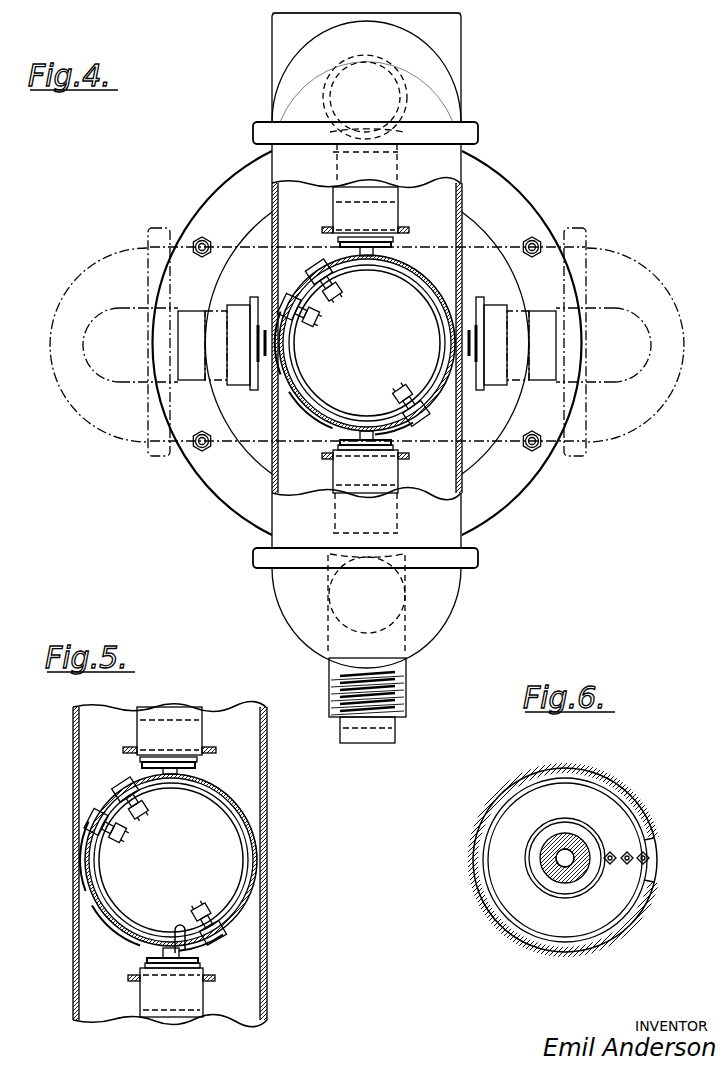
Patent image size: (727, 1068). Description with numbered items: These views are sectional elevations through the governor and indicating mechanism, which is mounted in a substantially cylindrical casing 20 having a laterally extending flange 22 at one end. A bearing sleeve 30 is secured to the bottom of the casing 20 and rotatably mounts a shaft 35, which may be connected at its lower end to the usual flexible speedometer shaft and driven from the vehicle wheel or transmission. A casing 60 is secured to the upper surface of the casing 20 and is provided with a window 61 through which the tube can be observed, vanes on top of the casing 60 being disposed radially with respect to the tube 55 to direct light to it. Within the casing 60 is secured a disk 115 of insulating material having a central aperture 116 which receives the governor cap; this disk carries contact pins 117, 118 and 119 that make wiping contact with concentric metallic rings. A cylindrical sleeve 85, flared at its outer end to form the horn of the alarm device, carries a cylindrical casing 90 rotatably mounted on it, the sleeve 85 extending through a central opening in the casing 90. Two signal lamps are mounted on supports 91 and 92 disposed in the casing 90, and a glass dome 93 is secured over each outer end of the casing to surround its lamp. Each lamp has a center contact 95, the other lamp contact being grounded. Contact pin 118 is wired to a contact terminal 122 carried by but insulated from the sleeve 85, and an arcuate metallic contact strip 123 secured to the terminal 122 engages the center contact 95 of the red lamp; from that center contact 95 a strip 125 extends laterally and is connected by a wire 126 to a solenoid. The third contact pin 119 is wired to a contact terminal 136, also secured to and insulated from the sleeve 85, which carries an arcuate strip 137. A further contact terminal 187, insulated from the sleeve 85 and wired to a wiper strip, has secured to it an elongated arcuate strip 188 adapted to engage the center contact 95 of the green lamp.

In FIG. 4, the casing 20 is at (502, 470).
In FIG. 4, the laterally extending flange 22 is at (488, 512).
In FIG. 4, the bearing sleeve 30 is at (406, 667).
In FIG. 4, the shaft 35 is at (393, 723).
In FIG. 6, the tube 55 is at (548, 873).
In FIG. 4, the casing 60 is at (460, 28).
In FIG. 6, the casing 60 is at (637, 803).
In FIG. 4, the window 61 is at (403, 77).
In FIG. 4, the cylindrical sleeve 85 is at (428, 308).
In FIG. 5, the cylindrical sleeve 85 is at (225, 822).
In FIG. 4, the cylindrical casing 90 is at (463, 194).
In FIG. 5, the cylindrical casing 90 is at (267, 778).
In FIG. 4, the support 91 is at (400, 213).
In FIG. 5, the support 91 is at (203, 730).
In FIG. 4, the support 92 is at (400, 473).
In FIG. 5, the support 92 is at (215, 985).
In FIG. 4, the glass dome 93 is at (433, 97).
In FIG. 4, the center contact 95 is at (383, 253).
In FIG. 5, the center contact 95 is at (160, 773).
In FIG. 6, the disk 115 is at (538, 927).
In FIG. 6, the central aperture 116 is at (562, 890).
In FIG. 6, the contact pin 117 is at (650, 857).
In FIG. 6, the contact pin 118 is at (627, 852).
In FIG. 6, the contact pin 119 is at (608, 852).
In FIG. 4, the contact terminal 122 is at (392, 388).
In FIG. 5, the contact terminal 122 is at (207, 905).
In FIG. 4, the arcuate metallic contact strip 123 is at (303, 407).
In FIG. 5, the arcuate metallic contact strip 123 is at (132, 945).
In FIG. 4, the strip 125 is at (388, 435).
In FIG. 5, the strip 125 is at (187, 960).
In FIG. 5, the wire 126 is at (175, 927).
In FIG. 4, the contact terminal 136 is at (313, 325).
In FIG. 5, the contact terminal 136 is at (117, 846).
In FIG. 4, the arcuate strip 137 is at (293, 365).
In FIG. 5, the arcuate strip 137 is at (84, 886).
In FIG. 4, the contact terminal 187 is at (347, 288).
In FIG. 5, the contact terminal 187 is at (150, 812).
In FIG. 4, the elongated arcuate strip 188 is at (420, 282).
In FIG. 5, the elongated arcuate strip 188 is at (232, 777).